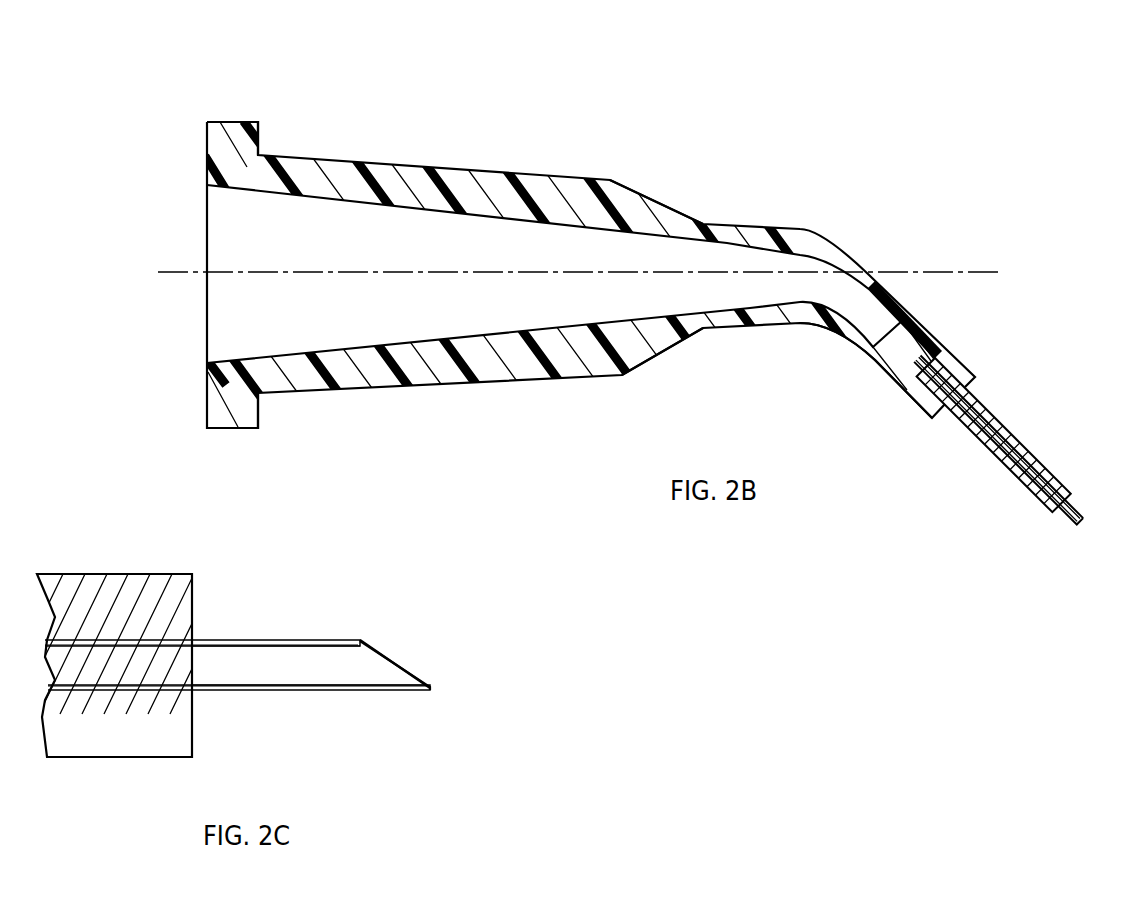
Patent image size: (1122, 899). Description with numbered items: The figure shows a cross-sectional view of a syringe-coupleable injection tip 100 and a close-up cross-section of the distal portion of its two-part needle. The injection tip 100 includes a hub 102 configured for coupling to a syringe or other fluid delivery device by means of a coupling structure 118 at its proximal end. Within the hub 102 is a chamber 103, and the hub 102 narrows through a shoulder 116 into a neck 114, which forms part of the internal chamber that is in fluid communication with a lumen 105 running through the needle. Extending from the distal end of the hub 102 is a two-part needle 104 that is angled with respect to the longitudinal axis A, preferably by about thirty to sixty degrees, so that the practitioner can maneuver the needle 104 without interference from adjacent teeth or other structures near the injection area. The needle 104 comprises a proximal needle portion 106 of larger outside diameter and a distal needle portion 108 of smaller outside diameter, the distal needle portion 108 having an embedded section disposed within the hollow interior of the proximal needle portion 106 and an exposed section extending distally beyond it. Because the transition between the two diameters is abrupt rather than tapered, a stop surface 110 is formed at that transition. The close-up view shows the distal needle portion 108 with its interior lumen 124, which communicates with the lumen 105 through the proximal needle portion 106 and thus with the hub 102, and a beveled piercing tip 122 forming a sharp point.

In FIG. 2B, the injection tip 100 is at (586, 70).
In FIG. 2B, the hub 102 is at (418, 117).
In FIG. 2B, the chamber 103 is at (421, 323).
In FIG. 2B, the needle 104 is at (1102, 513).
In FIG. 2C, the needle 104 is at (328, 574).
In FIG. 2B, the lumen 105 is at (988, 437).
In FIG. 2B, the proximal needle portion 106 is at (1010, 466).
In FIG. 2C, the proximal needle portion 106 is at (112, 585).
In FIG. 2B, the distal needle portion 108 is at (1078, 524).
In FIG. 2C, the distal needle portion 108 is at (212, 693).
In FIG. 2B, the stop surface 110 is at (1063, 513).
In FIG. 2C, the stop surface 110 is at (193, 597).
In FIG. 2B, the neck 114 is at (827, 340).
In FIG. 2B, the shoulder 116 is at (680, 222).
In FIG. 2B, the coupling structure 118 is at (240, 128).
In FIG. 2C, the piercing tip 122 is at (392, 670).
In FIG. 2C, the lumen 124 is at (279, 676).
In FIG. 2B, the longitudinal axis A is at (180, 270).